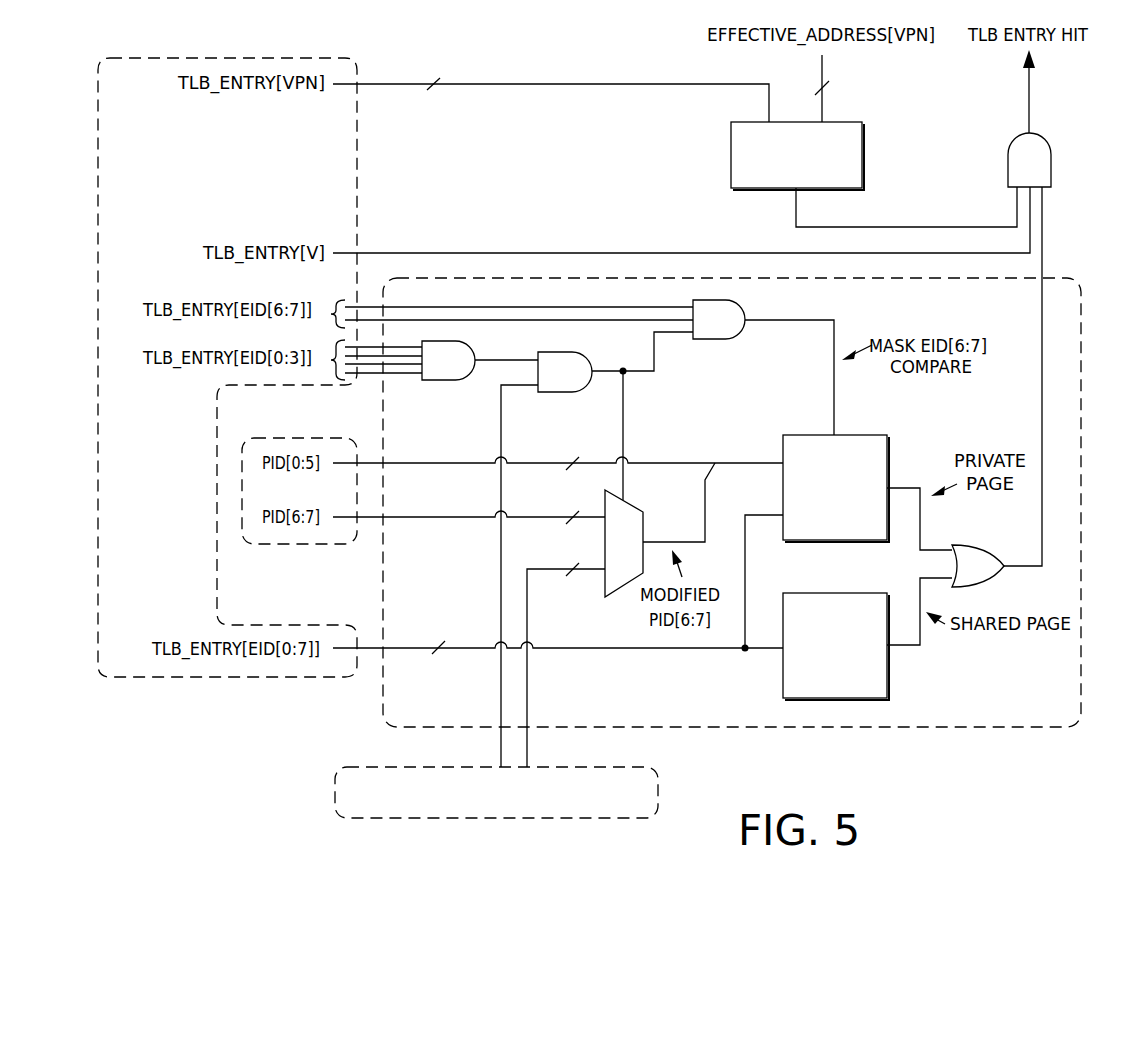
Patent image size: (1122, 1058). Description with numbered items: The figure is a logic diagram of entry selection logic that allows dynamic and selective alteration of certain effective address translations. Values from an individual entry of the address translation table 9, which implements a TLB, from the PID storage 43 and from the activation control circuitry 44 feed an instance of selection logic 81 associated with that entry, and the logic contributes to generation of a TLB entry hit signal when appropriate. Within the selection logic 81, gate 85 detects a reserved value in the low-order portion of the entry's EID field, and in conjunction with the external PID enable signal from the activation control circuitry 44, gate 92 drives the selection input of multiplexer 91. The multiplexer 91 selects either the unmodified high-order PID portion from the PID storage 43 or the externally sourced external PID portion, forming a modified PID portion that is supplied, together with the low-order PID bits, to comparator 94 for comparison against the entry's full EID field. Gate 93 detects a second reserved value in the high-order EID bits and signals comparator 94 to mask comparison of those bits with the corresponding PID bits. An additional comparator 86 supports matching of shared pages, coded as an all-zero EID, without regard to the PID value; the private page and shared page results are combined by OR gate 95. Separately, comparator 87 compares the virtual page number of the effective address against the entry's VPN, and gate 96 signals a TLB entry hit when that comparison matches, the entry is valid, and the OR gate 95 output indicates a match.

The address translation table 9 is at (357, 148).
The PID storage 43 is at (322, 544).
The activation control circuitry 44 is at (335, 784).
The selection logic 81 is at (1081, 326).
The gate 85 is at (440, 380).
The comparator 86 is at (887, 688).
The comparator 87 is at (862, 136).
The multiplexer 91 is at (643, 505).
The gate 92 is at (560, 392).
The gate 93 is at (712, 339).
The comparator 94 is at (887, 452).
The OR gate 95 is at (988, 546).
The gate 96 is at (1051, 150).